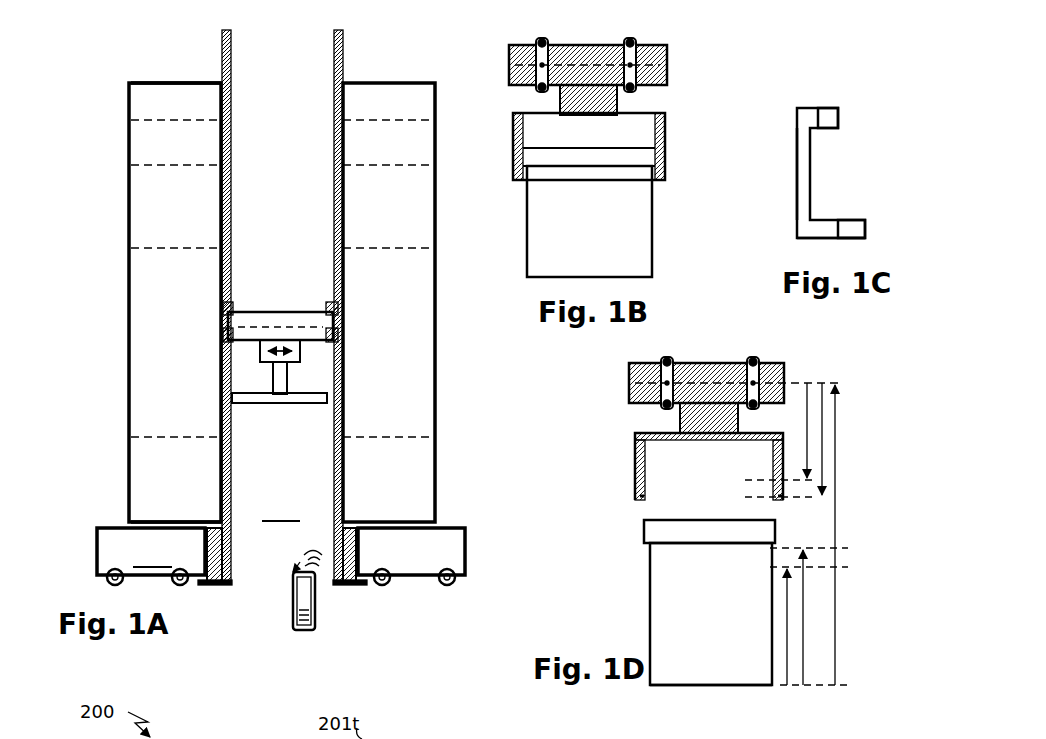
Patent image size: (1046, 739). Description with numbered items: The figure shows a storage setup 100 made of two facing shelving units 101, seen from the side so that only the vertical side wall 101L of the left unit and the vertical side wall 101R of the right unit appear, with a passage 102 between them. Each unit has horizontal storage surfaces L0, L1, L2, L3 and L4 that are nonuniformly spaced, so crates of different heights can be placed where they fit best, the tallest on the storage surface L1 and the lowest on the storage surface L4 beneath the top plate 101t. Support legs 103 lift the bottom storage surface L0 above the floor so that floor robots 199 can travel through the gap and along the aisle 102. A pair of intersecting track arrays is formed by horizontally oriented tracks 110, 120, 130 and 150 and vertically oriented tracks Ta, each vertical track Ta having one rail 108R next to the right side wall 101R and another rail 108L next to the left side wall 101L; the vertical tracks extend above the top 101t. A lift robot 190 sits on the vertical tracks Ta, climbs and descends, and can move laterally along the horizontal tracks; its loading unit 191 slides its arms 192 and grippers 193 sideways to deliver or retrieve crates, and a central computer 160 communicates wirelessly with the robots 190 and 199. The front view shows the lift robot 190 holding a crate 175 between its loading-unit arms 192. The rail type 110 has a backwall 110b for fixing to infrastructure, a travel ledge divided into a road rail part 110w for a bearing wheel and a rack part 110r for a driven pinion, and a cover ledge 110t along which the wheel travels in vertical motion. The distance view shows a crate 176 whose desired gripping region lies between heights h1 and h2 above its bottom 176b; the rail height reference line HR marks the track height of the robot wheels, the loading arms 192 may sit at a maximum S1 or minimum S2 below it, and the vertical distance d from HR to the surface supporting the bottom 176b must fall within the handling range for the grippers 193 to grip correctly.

In FIG. 1A, the storage setup 100 is at (124, 72).
In FIG. 1A, the shelving unit 101 is at (462, 452).
In FIG. 1A, the vertical side wall of left shelving unit 101L is at (142, 333).
In FIG. 1A, the vertical side wall of right shelving unit 101R is at (408, 340).
In FIG. 1A, the top plate 101t is at (163, 81).
In FIG. 1A, the passage 102 is at (281, 510).
In FIG. 1A, the support legs 103 is at (216, 563).
In FIG. 1A, the rail 108L is at (222, 477).
In FIG. 1A, the rail 108R is at (343, 51).
In FIG. 1A, the rail type 110 is at (342, 437).
In FIG. 1C, the rail type 110 is at (803, 84).
In FIG. 1C, the cover ledge 110t is at (818, 118).
In FIG. 1C, the backwall 110b is at (798, 180).
In FIG. 1C, the rack part 110r is at (849, 222).
In FIG. 1C, the road rail part 110w is at (818, 232).
In FIG. 1A, the horizontal track 120 is at (343, 247).
In FIG. 1A, the horizontal track 130 is at (343, 164).
In FIG. 1A, the horizontal track 150 is at (333, 83).
In FIG. 1A, the central computer 160 is at (298, 595).
In FIG. 1B, the crate 175 is at (627, 245).
In FIG. 1D, the crate 176 is at (650, 588).
In FIG. 1D, the bottom of crate 176b is at (698, 684).
In FIG. 1A, the lift robot 190 is at (294, 323).
In FIG. 1B, the lift robot 190 is at (654, 72).
In FIG. 1D, the lift robot 190 is at (713, 364).
In FIG. 1D, the loading unit 191 is at (680, 410).
In FIG. 1A, the loading-unit arms 192 is at (281, 367).
In FIG. 1B, the loading-unit arms 192 is at (653, 131).
In FIG. 1D, the loading-unit arms 192 is at (635, 466).
In FIG. 1A, the grippers 193 is at (232, 397).
In FIG. 1D, the grippers 193 is at (645, 495).
In FIG. 1A, the floor robot 199 is at (151, 556).
In FIG. 1A, the bottom storage surface L0 is at (150, 522).
In FIG. 1A, the storage surface L1 is at (130, 438).
In FIG. 1A, the storage surface L2 is at (130, 249).
In FIG. 1A, the storage surface L3 is at (130, 165).
In FIG. 1A, the storage surface L4 is at (130, 121).
In FIG. 1A, the vertical track Ta is at (326, 41).
In FIG. 1D, the rail height reference line HR is at (807, 382).
In FIG. 1D, the maximum vertical distance S1 is at (824, 422).
In FIG. 1D, the minimum vertical distance S2 is at (836, 454).
In FIG. 1D, the vertical distance d is at (836, 503).
In FIG. 1D, the first predetermined height h1 is at (789, 652).
In FIG. 1D, the second predetermined height h2 is at (805, 618).